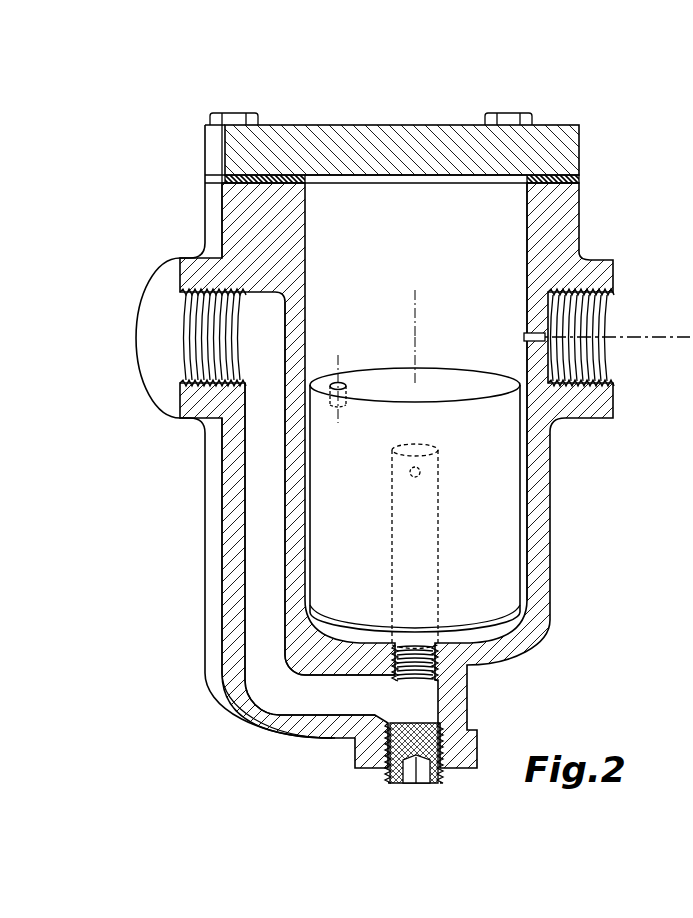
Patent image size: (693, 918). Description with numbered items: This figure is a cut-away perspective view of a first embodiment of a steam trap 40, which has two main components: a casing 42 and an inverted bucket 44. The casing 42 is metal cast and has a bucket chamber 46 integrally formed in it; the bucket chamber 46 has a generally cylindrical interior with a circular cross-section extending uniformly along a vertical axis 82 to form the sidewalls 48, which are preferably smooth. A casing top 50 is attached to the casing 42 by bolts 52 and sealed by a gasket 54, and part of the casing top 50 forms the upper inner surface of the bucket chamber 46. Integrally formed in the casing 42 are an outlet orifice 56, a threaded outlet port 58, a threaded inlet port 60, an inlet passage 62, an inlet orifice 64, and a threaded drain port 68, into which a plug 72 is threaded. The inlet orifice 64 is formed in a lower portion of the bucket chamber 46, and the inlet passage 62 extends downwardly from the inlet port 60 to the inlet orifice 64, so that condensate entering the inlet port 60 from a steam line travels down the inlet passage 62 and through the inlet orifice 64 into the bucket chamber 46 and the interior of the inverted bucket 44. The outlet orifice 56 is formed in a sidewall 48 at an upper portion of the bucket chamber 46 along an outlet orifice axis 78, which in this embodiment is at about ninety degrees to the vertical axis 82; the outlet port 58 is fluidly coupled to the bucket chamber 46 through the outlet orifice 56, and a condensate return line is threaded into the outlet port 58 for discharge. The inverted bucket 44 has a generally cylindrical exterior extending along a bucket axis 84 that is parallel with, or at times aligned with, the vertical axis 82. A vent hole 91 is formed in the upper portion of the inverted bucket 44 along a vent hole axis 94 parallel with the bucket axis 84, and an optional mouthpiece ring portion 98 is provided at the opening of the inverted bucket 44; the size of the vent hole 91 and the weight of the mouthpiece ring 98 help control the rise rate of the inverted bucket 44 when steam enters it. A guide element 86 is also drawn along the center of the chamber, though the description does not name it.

The steam trap 40 is at (586, 100).
The casing 42 is at (588, 205).
The inverted bucket 44 is at (466, 380).
The bucket chamber 46 is at (411, 233).
The sidewalls 48 is at (517, 252).
The casing top 50 is at (371, 125).
The bolts 52 is at (236, 117).
The gasket 54 is at (222, 178).
The outlet orifice 56 is at (538, 343).
The threaded outlet port 58 is at (600, 312).
The threaded inlet port 60 is at (180, 362).
The inlet passage 62 is at (258, 492).
The inlet orifice 64 is at (440, 650).
The threaded drain port 68 is at (448, 735).
The plug 72 is at (428, 778).
The outlet orifice axis 78 is at (636, 345).
The vertical axis 82 is at (420, 296).
The bucket axis 84 is at (420, 328).
The guide stem 86 is at (391, 546).
The vent hole 91 is at (336, 380).
The vent hole axis 94 is at (342, 362).
The mouthpiece ring portion 98 is at (336, 630).